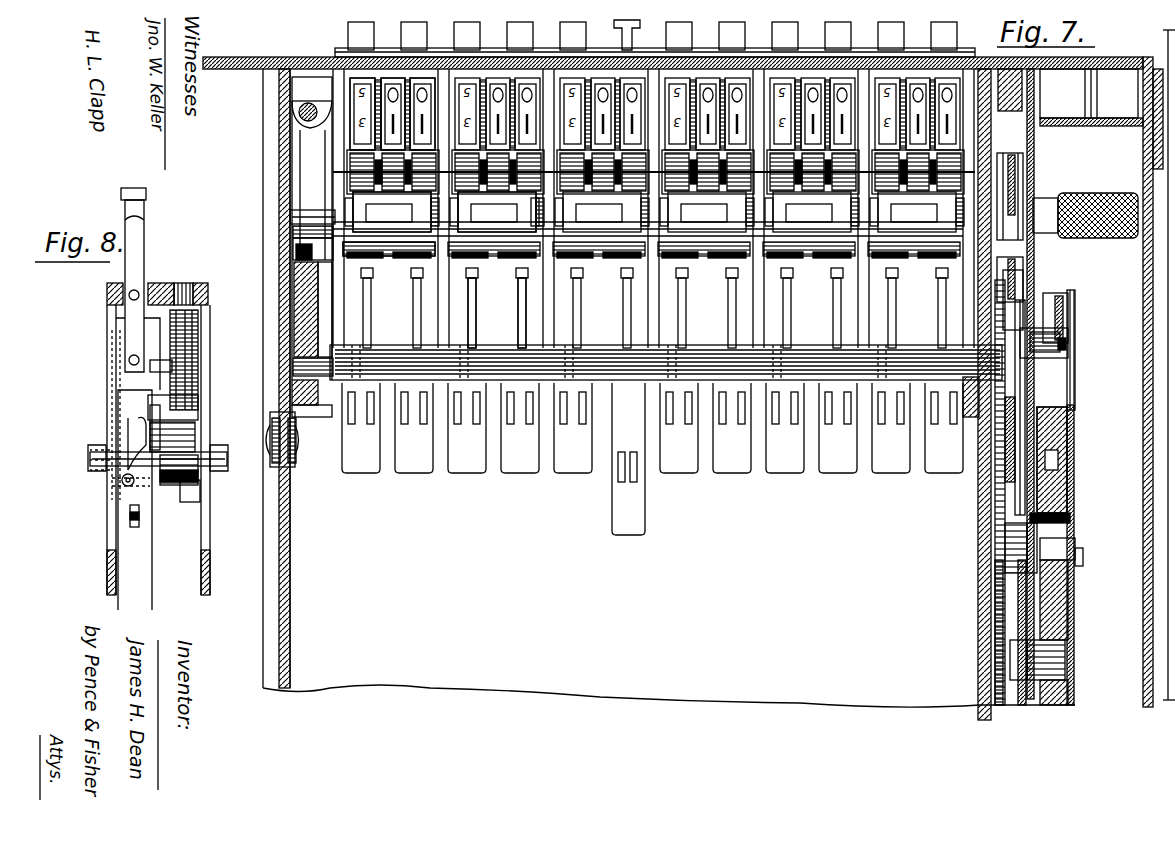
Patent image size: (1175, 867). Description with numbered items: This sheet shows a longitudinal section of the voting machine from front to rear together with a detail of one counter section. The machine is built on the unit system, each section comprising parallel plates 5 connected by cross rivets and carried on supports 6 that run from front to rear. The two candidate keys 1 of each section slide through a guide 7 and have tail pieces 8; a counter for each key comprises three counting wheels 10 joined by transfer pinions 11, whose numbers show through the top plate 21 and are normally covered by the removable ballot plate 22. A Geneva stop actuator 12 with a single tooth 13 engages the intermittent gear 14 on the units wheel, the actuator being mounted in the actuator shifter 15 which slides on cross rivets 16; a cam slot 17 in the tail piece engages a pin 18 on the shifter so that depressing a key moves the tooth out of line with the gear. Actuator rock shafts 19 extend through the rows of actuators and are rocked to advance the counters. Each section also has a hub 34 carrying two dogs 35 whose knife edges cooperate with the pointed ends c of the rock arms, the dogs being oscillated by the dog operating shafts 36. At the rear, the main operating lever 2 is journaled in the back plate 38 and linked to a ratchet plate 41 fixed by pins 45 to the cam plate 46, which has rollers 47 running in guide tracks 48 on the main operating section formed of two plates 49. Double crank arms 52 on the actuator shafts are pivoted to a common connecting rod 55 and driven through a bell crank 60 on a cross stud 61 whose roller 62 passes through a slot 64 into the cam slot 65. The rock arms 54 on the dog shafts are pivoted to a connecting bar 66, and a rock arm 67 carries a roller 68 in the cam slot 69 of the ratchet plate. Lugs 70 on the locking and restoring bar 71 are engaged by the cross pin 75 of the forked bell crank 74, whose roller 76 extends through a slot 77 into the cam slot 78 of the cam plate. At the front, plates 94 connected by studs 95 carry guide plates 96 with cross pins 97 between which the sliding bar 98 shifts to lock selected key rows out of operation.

In FIG. 7, the candidate key 1 is at (462, 30).
In FIG. 8, the candidate key 1 is at (145, 265).
In FIG. 7, the main operating lever 2 is at (1174, 272).
In FIG. 7, the parallel plates 5 is at (430, 350).
In FIG. 8, the parallel plates 5 is at (200, 555).
In FIG. 7, the supports 6 is at (600, 385).
In FIG. 7, the guide 7 is at (588, 45).
In FIG. 8, the guide 7 is at (165, 290).
In FIG. 7, the tail piece 8 is at (575, 472).
In FIG. 8, the tail piece 8 is at (145, 582).
In FIG. 7, the counting wheels 10 is at (412, 78).
In FIG. 8, the counting wheels 10 is at (185, 290).
In FIG. 7, the transfer pinions 11 is at (350, 180).
In FIG. 7, the Geneva stop actuator 12 is at (418, 246).
In FIG. 8, the Geneva stop actuator 12 is at (195, 492).
In FIG. 7, the tooth 13 is at (535, 226).
In FIG. 8, the tooth 13 is at (196, 425).
In FIG. 7, the intermittent gear 14 is at (468, 78).
In FIG. 8, the intermittent gear 14 is at (200, 350).
In FIG. 7, the actuator shifter 15 is at (385, 230).
In FIG. 8, the actuator shifter 15 is at (160, 425).
In FIG. 7, the cross rivets 16 is at (462, 236).
In FIG. 8, the cross rivets 16 is at (180, 488).
In FIG. 8, the cam slot 17 is at (134, 445).
In FIG. 8, the pin 18 is at (122, 482).
In FIG. 7, the actuator rock shafts 19 is at (348, 212).
In FIG. 8, the actuator rock shafts 19 is at (215, 466).
In FIG. 7, the top plate 21 is at (300, 58).
In FIG. 7, the ballot plate 22 is at (275, 58).
In FIG. 7, the hub 34 is at (580, 305).
In FIG. 7, the dogs 35 is at (478, 305).
In FIG. 7, the dog operating shafts 36 is at (1070, 348).
In FIG. 7, the back plate 38 is at (1143, 683).
In FIG. 7, the ratchet plate 41 is at (1070, 432).
In FIG. 7, the pins 45 is at (1084, 560).
In FIG. 7, the cam plate 46 is at (1055, 612).
In FIG. 7, the rollers 47 is at (1058, 458).
In FIG. 7, the guide tracks 48 is at (1068, 412).
In FIG. 7, the plates 49 is at (1035, 612).
In FIG. 7, the crank arms 52 is at (1010, 203).
In FIG. 7, the crank arms 54 is at (1015, 290).
In FIG. 7, the connecting rod 55 is at (1020, 158).
In FIG. 7, the bell crank 60 is at (1010, 585).
In FIG. 7, the cross stud 61 is at (1005, 540).
In FIG. 7, the pin or roller 62 is at (1070, 518).
In FIG. 7, the slot 64 is at (1015, 553).
In FIG. 7, the cam slot 65 is at (1052, 548).
In FIG. 7, the connecting bar 66 is at (1020, 262).
In FIG. 7, the rock arm 67 is at (1070, 313).
In FIG. 7, the pin or roller 68 is at (1070, 292).
In FIG. 7, the cam slot 69 is at (1076, 375).
In FIG. 7, the lugs 70 is at (982, 410).
In FIG. 7, the locking and restoring bar 71 is at (1010, 455).
In FIG. 7, the bell crank 74 is at (1005, 480).
In FIG. 7, the cross pin 75 is at (1010, 400).
In FIG. 7, the pin or roller 76 is at (1027, 645).
In FIG. 7, the slot 77 is at (1025, 705).
In FIG. 7, the cam slot 78 is at (1065, 655).
In FIG. 7, the plates 94 is at (298, 147).
In FIG. 7, the rivets or studs 95 is at (290, 96).
In FIG. 7, the guide plates 96 is at (298, 262).
In FIG. 7, the cross pins 97 is at (292, 233).
In FIG. 7, the sliding bar 98 is at (295, 312).
In FIG. 8, the pointed ends c is at (139, 520).